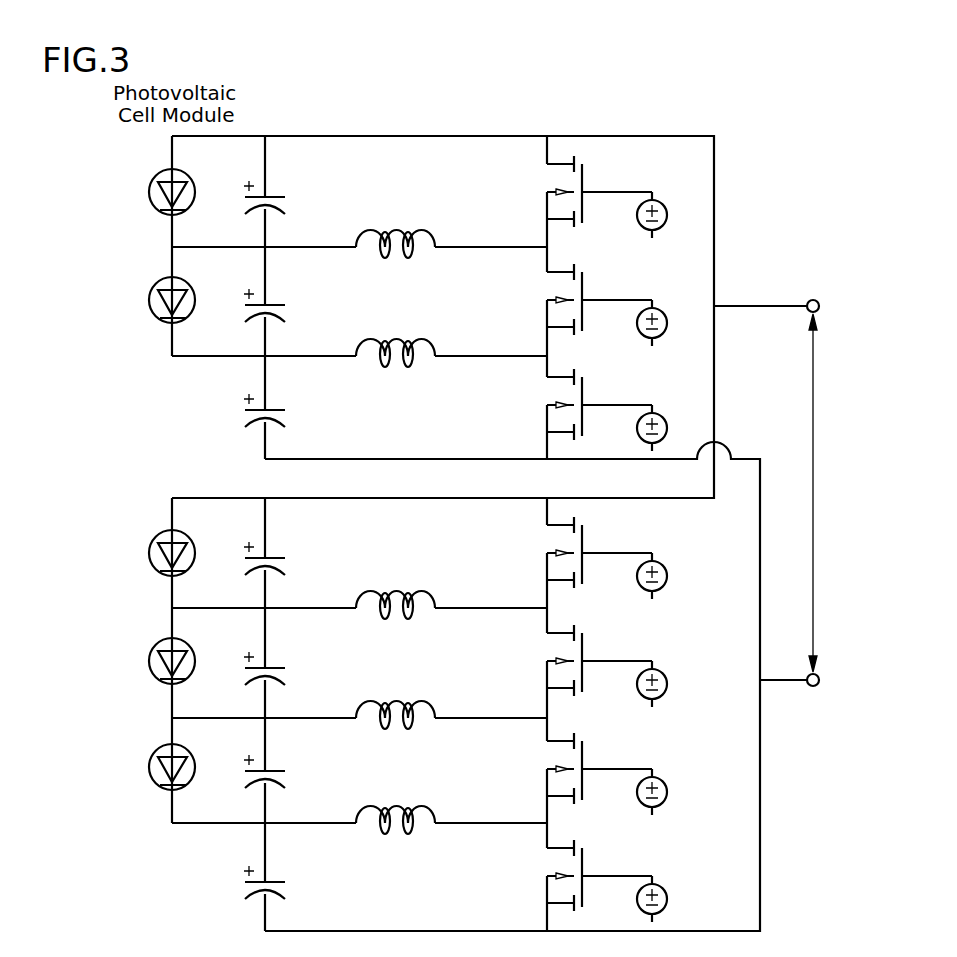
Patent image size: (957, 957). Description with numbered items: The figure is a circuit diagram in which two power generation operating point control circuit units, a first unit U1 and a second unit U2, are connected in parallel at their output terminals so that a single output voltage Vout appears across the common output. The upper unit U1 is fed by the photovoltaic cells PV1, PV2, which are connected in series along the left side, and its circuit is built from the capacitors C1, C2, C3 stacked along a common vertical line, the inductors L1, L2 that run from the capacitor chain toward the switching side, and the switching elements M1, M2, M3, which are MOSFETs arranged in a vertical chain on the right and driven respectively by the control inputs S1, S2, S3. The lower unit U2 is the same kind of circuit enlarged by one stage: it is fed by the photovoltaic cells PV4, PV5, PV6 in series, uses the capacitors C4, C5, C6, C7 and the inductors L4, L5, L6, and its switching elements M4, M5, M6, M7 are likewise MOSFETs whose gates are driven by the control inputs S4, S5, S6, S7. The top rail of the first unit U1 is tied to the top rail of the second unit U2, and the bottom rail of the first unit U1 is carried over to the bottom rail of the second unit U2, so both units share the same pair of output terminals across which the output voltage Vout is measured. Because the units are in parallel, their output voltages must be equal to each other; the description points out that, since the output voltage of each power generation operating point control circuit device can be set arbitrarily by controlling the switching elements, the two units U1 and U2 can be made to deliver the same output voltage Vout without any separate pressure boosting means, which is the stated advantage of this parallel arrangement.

The unit U1 is at (87, 217).
The unit U2 is at (84, 575).
The photovoltaic cell PV1 is at (146, 191).
The photovoltaic cell PV2 is at (146, 300).
The photovoltaic cell PV4 is at (146, 553).
The photovoltaic cell PV5 is at (146, 661).
The photovoltaic cell PV6 is at (146, 767).
The capacitor C1 is at (275, 190).
The capacitor C2 is at (275, 296).
The capacitor C3 is at (272, 402).
The capacitor C4 is at (276, 551).
The capacitor C5 is at (276, 660).
The capacitor C6 is at (273, 765).
The capacitor C7 is at (273, 873).
The inductor L1 is at (395, 227).
The inductor L2 is at (395, 336).
The inductor L4 is at (395, 588).
The inductor L5 is at (395, 698).
The inductor L6 is at (395, 803).
The switching element (MOSFET) M1 is at (574, 191).
The switching element (MOSFET) M2 is at (574, 299).
The switching element (MOSFET) M3 is at (574, 404).
The switching element (MOSFET) M4 is at (574, 552).
The switching element (MOSFET) M5 is at (574, 660).
The switching element (MOSFET) M6 is at (574, 768).
The switching element (MOSFET) M7 is at (574, 875).
The control input S1 is at (663, 204).
The control input S2 is at (663, 312).
The control input S3 is at (663, 417).
The control input S4 is at (663, 565).
The control input S5 is at (663, 673).
The control input S6 is at (663, 781).
The control input S7 is at (663, 888).
The output voltage Vout is at (839, 493).